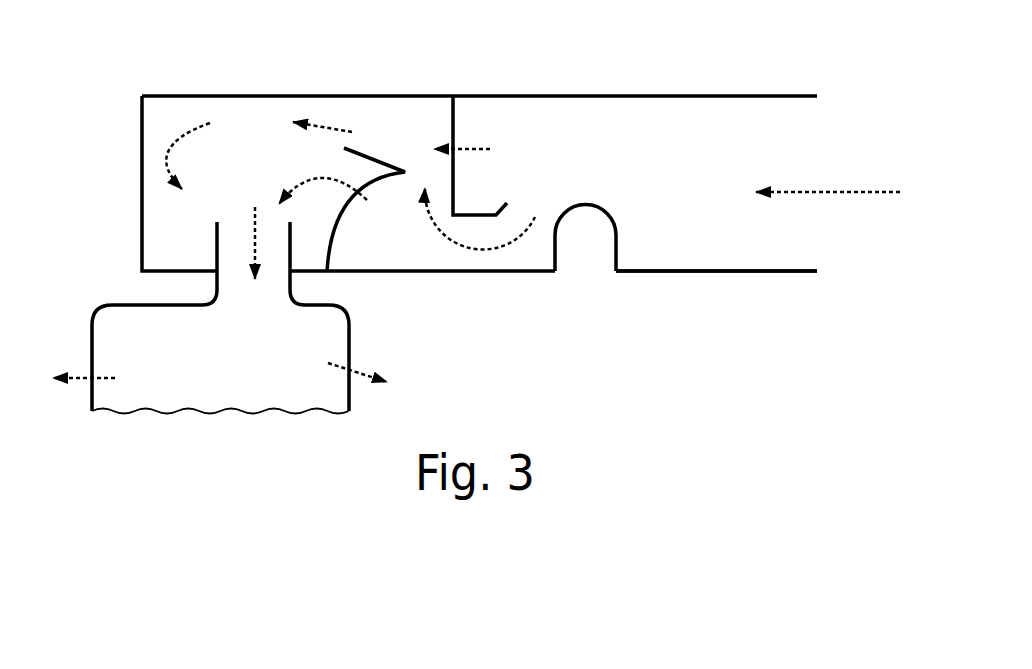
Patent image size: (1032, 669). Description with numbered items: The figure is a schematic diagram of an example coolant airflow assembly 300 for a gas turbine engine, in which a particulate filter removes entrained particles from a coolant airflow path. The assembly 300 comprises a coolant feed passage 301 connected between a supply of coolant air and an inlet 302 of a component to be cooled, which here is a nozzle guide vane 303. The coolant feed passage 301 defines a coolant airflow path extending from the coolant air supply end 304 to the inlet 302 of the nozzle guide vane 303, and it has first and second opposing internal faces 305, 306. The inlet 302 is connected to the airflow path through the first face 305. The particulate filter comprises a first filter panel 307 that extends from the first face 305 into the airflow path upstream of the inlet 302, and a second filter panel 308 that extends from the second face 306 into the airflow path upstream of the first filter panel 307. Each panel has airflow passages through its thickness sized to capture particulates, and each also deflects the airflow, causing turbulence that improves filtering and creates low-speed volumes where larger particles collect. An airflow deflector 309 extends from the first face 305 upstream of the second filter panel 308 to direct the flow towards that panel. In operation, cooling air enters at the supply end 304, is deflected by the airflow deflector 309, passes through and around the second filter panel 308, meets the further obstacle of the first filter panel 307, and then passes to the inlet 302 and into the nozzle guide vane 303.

The coolant airflow assembly 300 is at (126, 79).
The coolant feed passage 301 is at (728, 95).
The inlet 302 is at (248, 230).
The nozzle guide vane 303 is at (140, 303).
The coolant air supply end 304 is at (811, 187).
The first face 305 is at (673, 268).
The second face 306 is at (543, 96).
The first filter panel 307 is at (348, 200).
The second filter panel 308 is at (452, 137).
The airflow deflector 309 is at (610, 208).